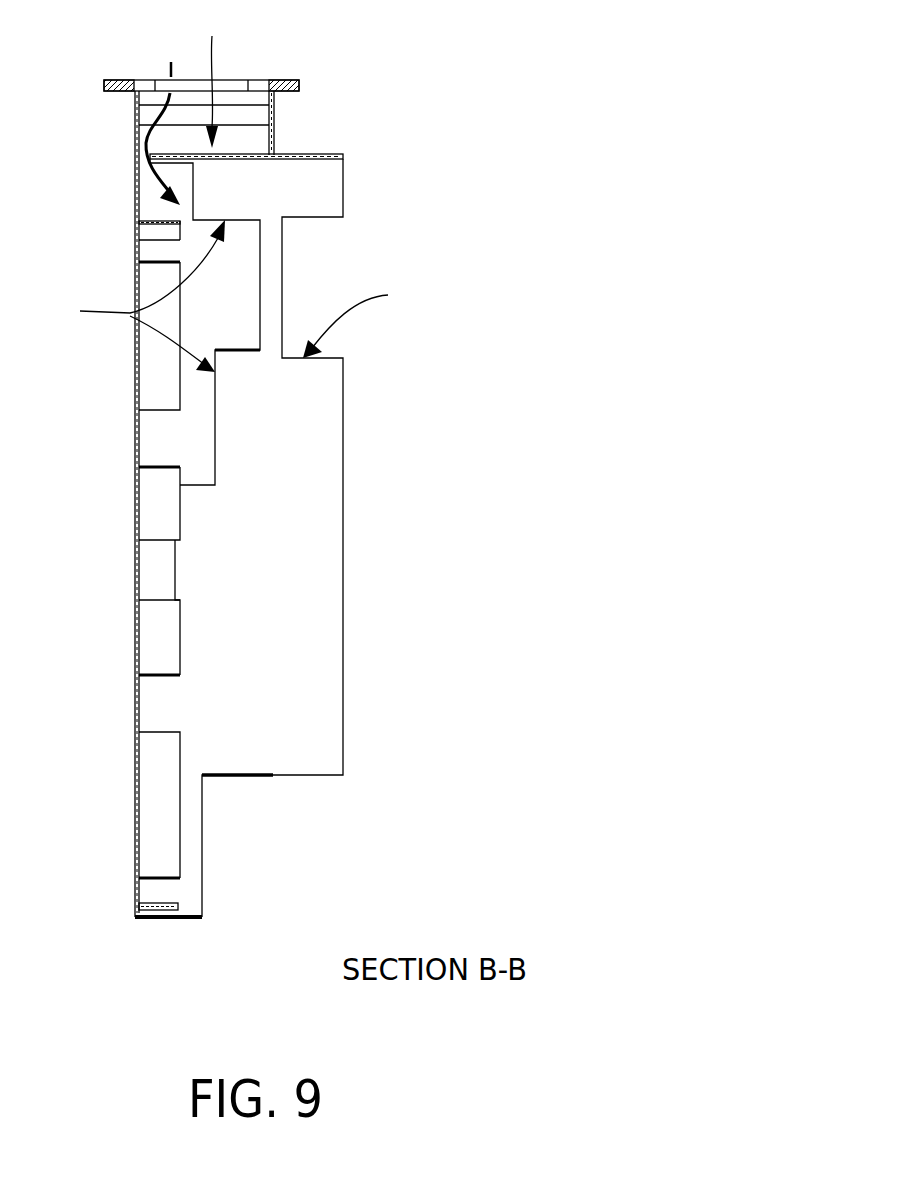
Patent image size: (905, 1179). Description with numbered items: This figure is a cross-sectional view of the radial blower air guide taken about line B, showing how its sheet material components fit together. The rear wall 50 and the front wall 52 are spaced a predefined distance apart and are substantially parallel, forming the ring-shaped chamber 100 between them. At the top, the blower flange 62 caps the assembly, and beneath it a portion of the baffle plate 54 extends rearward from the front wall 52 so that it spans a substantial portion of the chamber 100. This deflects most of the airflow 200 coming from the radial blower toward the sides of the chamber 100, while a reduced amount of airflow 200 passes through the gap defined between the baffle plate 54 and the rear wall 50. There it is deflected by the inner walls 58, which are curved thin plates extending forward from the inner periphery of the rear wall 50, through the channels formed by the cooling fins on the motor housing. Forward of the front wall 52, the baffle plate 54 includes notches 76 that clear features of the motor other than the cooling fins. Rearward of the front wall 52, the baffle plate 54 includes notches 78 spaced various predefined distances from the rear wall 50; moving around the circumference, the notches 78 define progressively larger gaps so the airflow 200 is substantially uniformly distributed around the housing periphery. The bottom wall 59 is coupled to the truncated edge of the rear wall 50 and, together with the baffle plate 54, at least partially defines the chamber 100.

The airflow 200 is at (169, 66).
The chamber 100 is at (208, 77).
The blower flange 62 is at (110, 80).
The front wall 52 is at (274, 134).
The rear wall 50 is at (135, 168).
The baffle plate 54 is at (344, 183).
The notches 78 is at (135, 296).
The notches 76 is at (367, 320).
The inner walls 58 is at (153, 355).
The bottom wall 59 is at (163, 921).